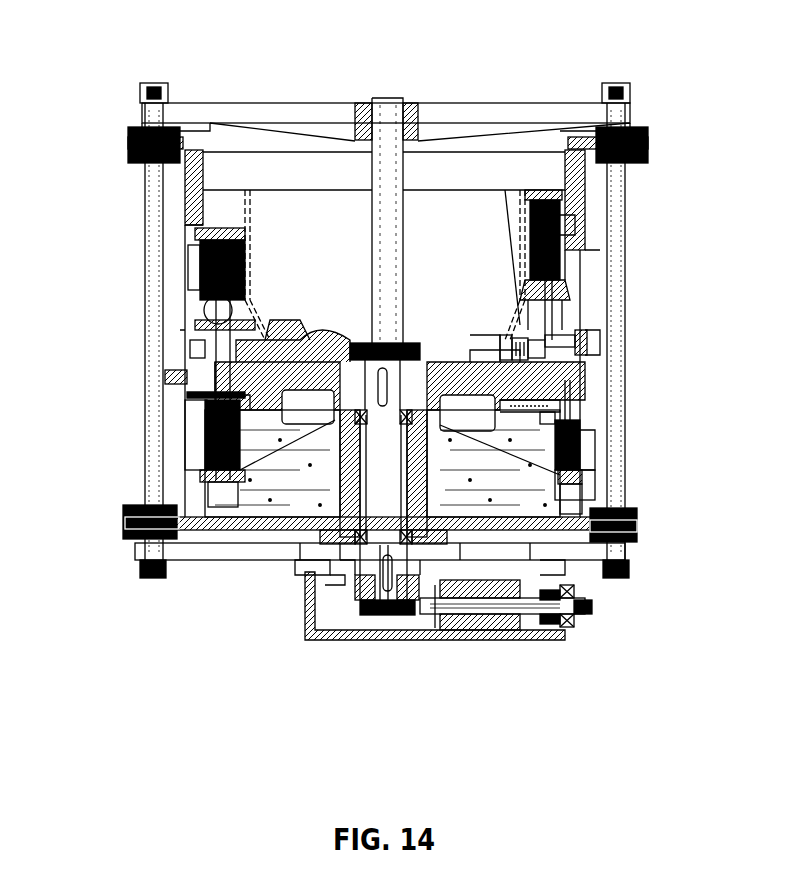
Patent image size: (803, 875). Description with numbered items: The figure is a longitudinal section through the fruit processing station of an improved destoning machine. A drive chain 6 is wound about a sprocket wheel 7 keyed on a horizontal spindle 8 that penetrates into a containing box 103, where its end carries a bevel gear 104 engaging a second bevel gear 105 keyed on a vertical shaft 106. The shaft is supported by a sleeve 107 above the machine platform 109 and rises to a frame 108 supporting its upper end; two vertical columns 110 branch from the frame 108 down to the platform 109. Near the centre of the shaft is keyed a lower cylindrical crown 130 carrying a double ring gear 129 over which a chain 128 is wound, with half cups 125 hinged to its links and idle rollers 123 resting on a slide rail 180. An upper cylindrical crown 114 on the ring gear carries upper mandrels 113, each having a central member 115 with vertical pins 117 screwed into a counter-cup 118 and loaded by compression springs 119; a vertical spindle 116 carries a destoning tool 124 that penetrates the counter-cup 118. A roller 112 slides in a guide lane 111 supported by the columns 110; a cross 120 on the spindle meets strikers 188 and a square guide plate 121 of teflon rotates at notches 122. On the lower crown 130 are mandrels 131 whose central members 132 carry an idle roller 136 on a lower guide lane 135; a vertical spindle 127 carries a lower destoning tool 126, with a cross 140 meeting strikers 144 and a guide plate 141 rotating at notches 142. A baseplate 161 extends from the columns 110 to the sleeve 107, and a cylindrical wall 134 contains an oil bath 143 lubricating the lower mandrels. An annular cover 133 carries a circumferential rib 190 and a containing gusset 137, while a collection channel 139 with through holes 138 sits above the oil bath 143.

The drive chain 6 is at (568, 618).
The sprocket wheel 7 is at (578, 608).
The horizontal spindle 8 is at (572, 602).
The containing box 103 is at (500, 640).
The bevel gear 104 is at (437, 620).
The second bevel gear 105 is at (326, 596).
The vertical shaft 106 is at (385, 98).
The sleeve 107 is at (312, 592).
The frame 108 is at (470, 116).
The machine platform 109 is at (192, 562).
The vertical columns 110 is at (145, 190).
The guide lane 111 is at (195, 251).
The roller 112 is at (192, 236).
The upper mandrels 113 is at (592, 265).
The upper cylindrical crown 114 is at (504, 320).
The central member 115 is at (196, 262).
The vertical spindle 116 is at (577, 228).
The vertical pins 117 is at (512, 212).
The counter-cup 118 is at (206, 292).
The compression spring 119 is at (190, 276).
The cross 120 is at (280, 230).
The square guide plate 121 is at (185, 226).
The notches 122 is at (205, 230).
The idle rollers 123 is at (206, 312).
The destoning tool 124 is at (527, 276).
The half cups 125 is at (582, 332).
The lower destoning tool 126 is at (210, 337).
The vertical spindle 127 is at (202, 436).
The chain 128 is at (528, 333).
The double ring gear 129 is at (455, 365).
The lower cylindrical crown 130 is at (468, 375).
The mandrels 131 is at (582, 454).
The central members 132 is at (187, 456).
The annular cover 133 is at (300, 336).
The cylindrical wall 134 is at (155, 545).
The lower guide lane 135 is at (170, 548).
The idle roller 136 is at (586, 472).
The containing gusset 137 is at (182, 376).
The through holes 138 is at (187, 416).
The collection channel 139 is at (567, 413).
The cross 140 is at (245, 462).
The guide plate 141 is at (178, 498).
The notches 142 is at (210, 534).
The oil bath 143 is at (282, 522).
The strikers 144 is at (206, 472).
The baseplate 161 is at (240, 540).
The slide rail 180 is at (572, 376).
The strikers 188 is at (200, 232).
The circumferential rib 190 is at (200, 398).